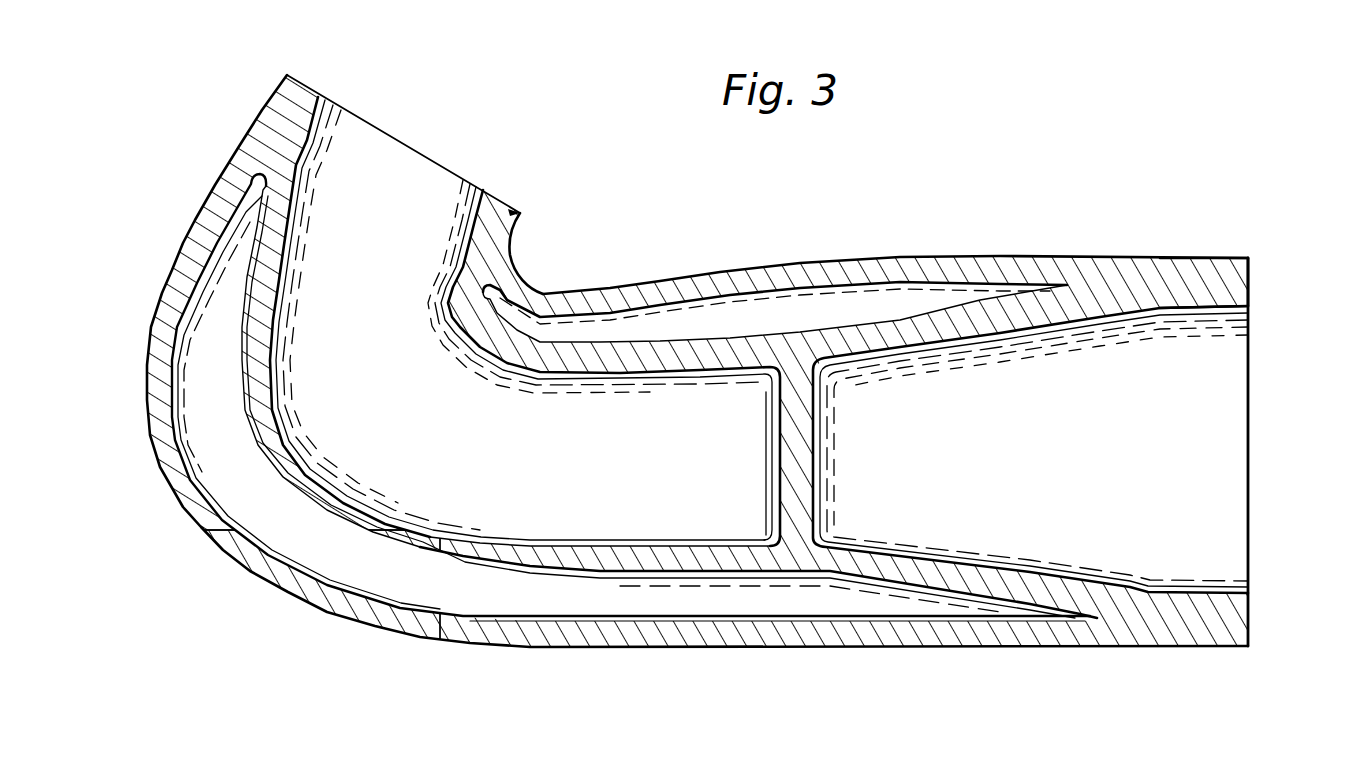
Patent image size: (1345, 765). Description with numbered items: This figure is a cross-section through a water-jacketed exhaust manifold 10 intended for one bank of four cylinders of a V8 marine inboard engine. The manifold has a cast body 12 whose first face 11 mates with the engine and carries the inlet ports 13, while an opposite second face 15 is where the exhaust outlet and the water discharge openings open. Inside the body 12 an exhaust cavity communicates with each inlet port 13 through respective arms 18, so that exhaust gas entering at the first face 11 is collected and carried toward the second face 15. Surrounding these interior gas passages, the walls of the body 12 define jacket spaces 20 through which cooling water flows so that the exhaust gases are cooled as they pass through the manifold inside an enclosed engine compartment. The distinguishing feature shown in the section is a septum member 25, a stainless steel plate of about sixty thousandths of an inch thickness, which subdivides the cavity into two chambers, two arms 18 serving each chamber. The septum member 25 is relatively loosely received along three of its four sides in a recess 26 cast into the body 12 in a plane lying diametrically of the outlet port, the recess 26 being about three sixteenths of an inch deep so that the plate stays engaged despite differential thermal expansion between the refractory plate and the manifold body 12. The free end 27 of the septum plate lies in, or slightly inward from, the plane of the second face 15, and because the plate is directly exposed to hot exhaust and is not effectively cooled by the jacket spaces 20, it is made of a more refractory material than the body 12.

The water-jacketed exhaust manifold 10 is at (712, 232).
The first face 11 is at (506, 200).
The body 12 is at (580, 280).
The inlet ports 13 is at (413, 160).
The second face 15 is at (1250, 277).
The arms 18 is at (452, 446).
The jacket spaces 20 is at (800, 302).
The septum member 25 is at (1205, 477).
The recess 26 is at (812, 420).
The end 27 is at (1250, 415).